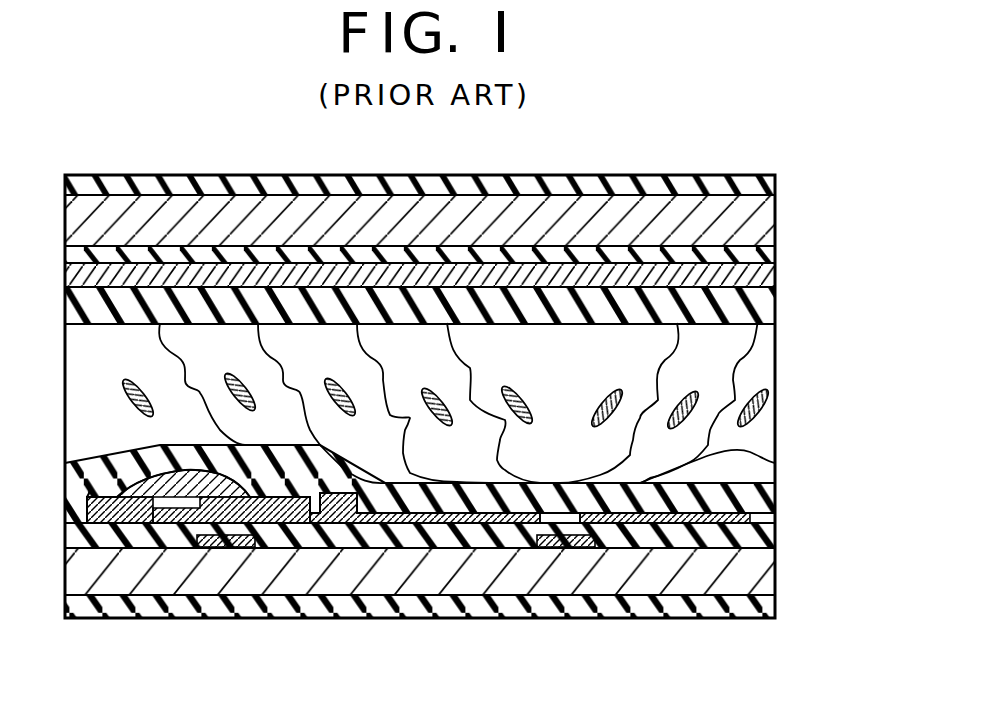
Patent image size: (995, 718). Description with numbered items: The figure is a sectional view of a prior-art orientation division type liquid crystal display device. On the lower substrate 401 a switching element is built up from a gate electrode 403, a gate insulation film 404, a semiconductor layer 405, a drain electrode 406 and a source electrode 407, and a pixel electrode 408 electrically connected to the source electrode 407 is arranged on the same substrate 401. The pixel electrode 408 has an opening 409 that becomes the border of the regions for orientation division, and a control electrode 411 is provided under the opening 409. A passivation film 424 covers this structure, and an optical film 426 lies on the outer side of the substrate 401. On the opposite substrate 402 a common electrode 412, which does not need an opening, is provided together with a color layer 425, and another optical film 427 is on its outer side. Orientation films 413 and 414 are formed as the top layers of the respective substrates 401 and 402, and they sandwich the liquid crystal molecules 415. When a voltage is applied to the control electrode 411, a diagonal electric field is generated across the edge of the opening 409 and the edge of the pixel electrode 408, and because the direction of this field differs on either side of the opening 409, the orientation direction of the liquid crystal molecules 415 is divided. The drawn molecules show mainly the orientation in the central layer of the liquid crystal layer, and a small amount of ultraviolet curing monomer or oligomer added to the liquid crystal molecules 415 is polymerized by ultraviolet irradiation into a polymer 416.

The substrate 401 is at (765, 569).
The opposite substrate 402 is at (763, 221).
The gate electrode 403 is at (208, 548).
The gate insulation film 404 is at (765, 534).
The semiconductor layer 405 is at (252, 494).
The drain electrode 406 is at (125, 510).
The source electrode 407 is at (305, 500).
The pixel electrode 408 is at (438, 523).
The opening 409 is at (563, 548).
The control electrode 411 is at (560, 524).
The common electrode 412 is at (763, 277).
The orientation film 413 is at (765, 495).
The orientation film 414 is at (763, 308).
The liquid crystal molecules 415 is at (765, 398).
The polymer 416 is at (775, 463).
The passivation film 424 is at (100, 500).
The color layer 425 is at (765, 254).
The optical film 426 is at (765, 604).
The optical film 427 is at (768, 183).